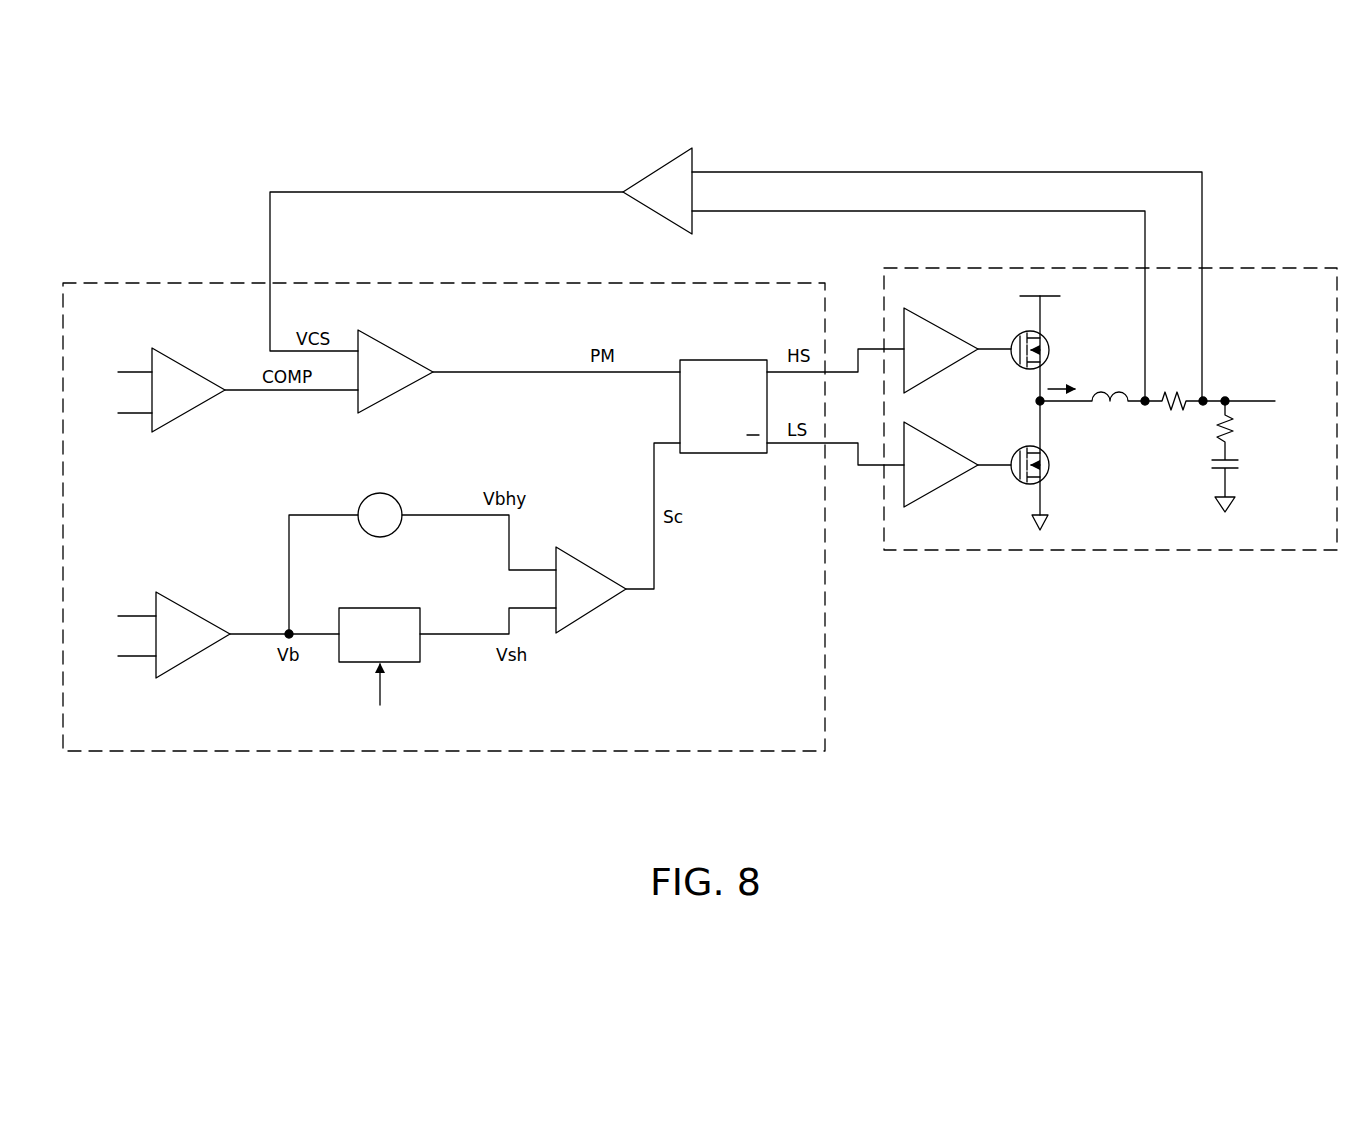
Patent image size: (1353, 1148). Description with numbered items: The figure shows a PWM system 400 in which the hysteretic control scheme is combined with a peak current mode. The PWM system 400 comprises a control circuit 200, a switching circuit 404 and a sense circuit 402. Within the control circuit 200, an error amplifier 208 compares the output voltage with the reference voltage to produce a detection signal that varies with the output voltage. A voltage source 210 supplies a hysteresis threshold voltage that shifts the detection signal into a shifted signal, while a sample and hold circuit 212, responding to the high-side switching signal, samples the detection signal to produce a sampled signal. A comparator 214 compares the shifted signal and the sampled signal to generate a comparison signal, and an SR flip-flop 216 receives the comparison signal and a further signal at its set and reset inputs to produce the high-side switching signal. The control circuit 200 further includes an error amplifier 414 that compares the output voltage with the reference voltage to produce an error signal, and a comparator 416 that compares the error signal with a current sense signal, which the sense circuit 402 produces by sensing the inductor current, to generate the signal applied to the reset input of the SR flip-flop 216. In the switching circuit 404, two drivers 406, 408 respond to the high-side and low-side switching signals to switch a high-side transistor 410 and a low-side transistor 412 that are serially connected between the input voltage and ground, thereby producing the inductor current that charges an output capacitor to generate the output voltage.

The control circuit 200 is at (825, 688).
The error amplifier 208 is at (192, 611).
The voltage source 210 is at (398, 527).
The sample and hold circuit 212 is at (422, 650).
The comparator 214 is at (591, 567).
The SR flip-flop 216 is at (719, 360).
The PWM system 400 is at (1250, 130).
The sense circuit 402 is at (657, 170).
The switching circuit 404 is at (1120, 552).
The driver 406 is at (941, 328).
The driver 408 is at (939, 488).
The high-side transistor 410 is at (1054, 328).
The low-side transistor 412 is at (1054, 480).
The error amplifier 414 is at (190, 366).
The comparator 416 is at (398, 349).